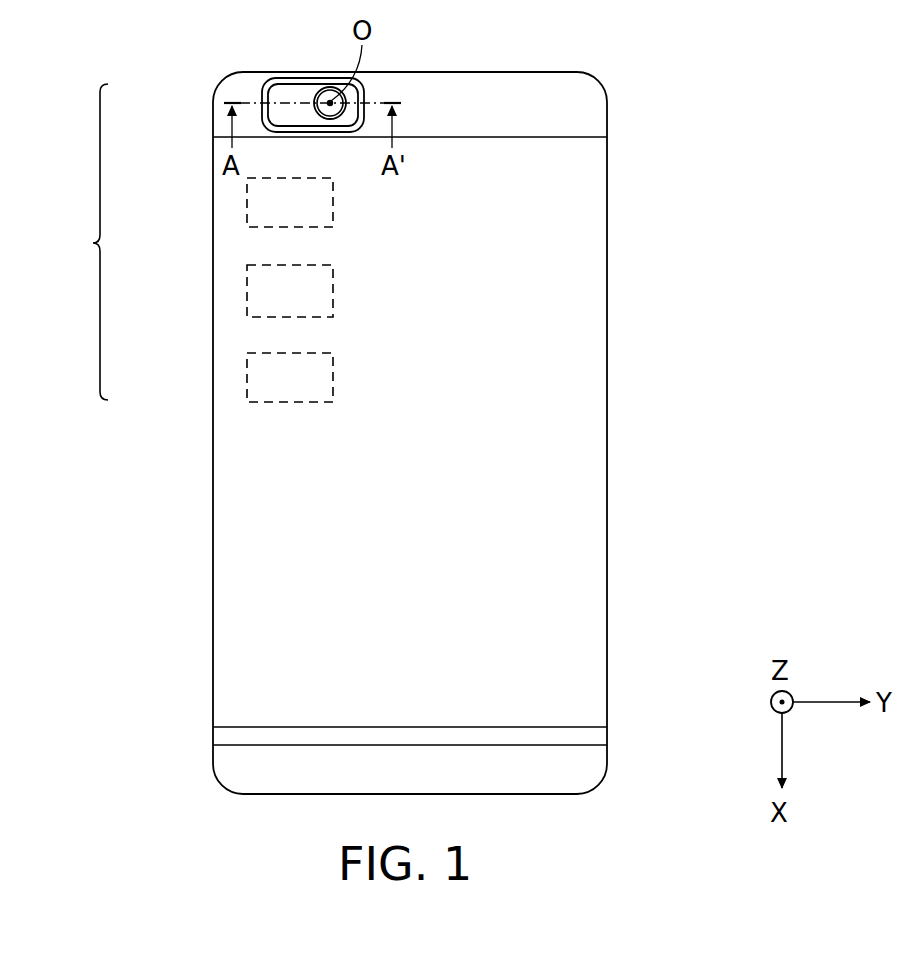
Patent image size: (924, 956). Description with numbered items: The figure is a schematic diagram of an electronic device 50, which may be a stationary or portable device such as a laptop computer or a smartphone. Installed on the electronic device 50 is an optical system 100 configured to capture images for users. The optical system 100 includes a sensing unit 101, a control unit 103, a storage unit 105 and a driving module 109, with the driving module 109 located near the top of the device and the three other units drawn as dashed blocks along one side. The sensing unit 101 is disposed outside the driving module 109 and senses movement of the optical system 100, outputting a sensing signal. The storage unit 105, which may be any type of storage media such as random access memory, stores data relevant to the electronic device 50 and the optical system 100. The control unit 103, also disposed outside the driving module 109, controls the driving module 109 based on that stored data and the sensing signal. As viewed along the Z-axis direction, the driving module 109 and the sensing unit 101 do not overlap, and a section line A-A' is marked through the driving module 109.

The electronic device 50 is at (598, 78).
The optical system 100 is at (74, 242).
The sensing unit 101 is at (247, 207).
The control unit 103 is at (247, 293).
The storage unit 105 is at (247, 380).
The driving module 109 is at (262, 86).